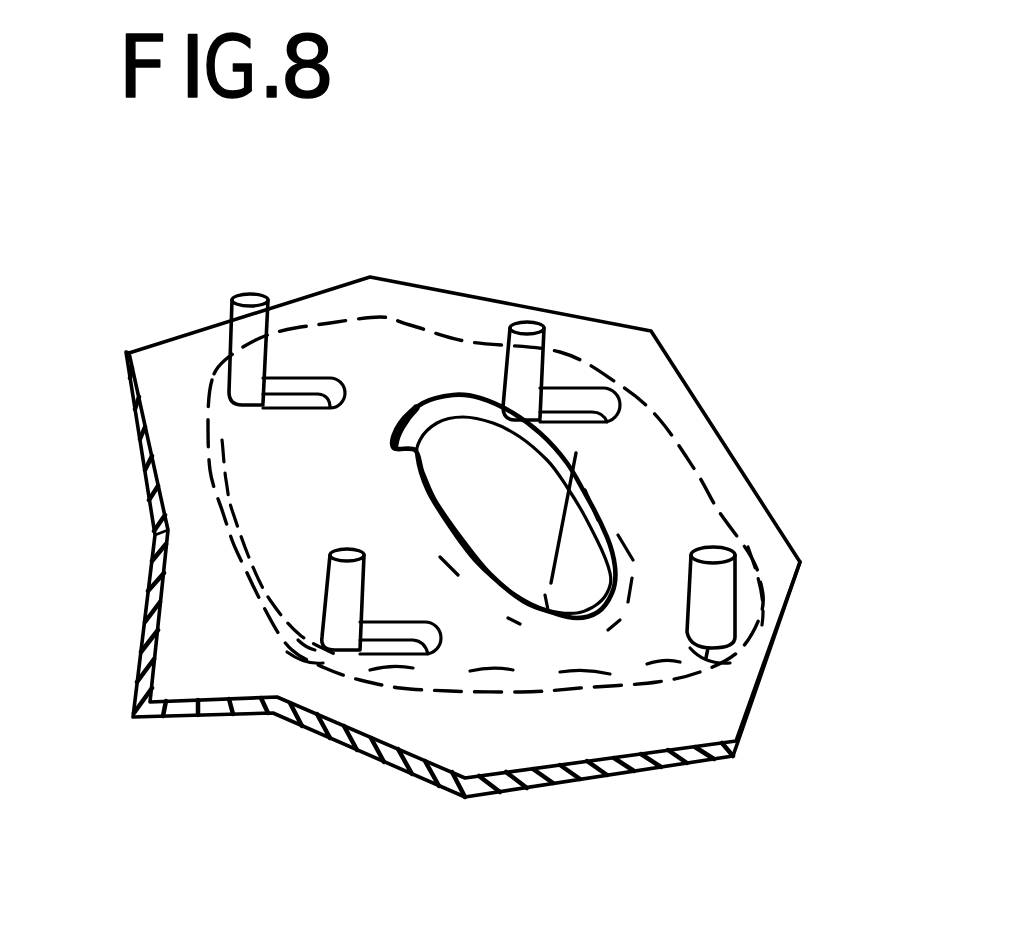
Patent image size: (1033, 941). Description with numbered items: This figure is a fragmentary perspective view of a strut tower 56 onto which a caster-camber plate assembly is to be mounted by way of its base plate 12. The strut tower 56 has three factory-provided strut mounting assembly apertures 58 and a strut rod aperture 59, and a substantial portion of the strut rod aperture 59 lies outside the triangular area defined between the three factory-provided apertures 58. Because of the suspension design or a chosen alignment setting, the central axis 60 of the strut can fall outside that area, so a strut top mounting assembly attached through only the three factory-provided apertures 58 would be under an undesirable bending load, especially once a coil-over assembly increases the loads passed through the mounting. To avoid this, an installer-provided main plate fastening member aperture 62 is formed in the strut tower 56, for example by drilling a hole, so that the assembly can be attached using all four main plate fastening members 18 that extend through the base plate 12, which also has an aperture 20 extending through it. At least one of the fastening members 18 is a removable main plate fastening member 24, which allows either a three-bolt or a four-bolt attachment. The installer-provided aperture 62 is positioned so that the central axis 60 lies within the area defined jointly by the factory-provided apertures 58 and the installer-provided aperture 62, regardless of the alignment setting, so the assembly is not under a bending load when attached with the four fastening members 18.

The base plate 12 is at (227, 520).
The main plate fastening members 18 is at (248, 297).
The aperture 20 is at (417, 510).
The removable main plate fastening member 24 is at (723, 585).
The strut tower 56 is at (540, 302).
The factory-provided strut mounting assembly apertures 58 is at (284, 371).
The strut rod aperture 59 is at (583, 610).
The central axis of the strut 60 is at (583, 477).
The installer-provided main plate fastening member aperture 62 is at (640, 684).